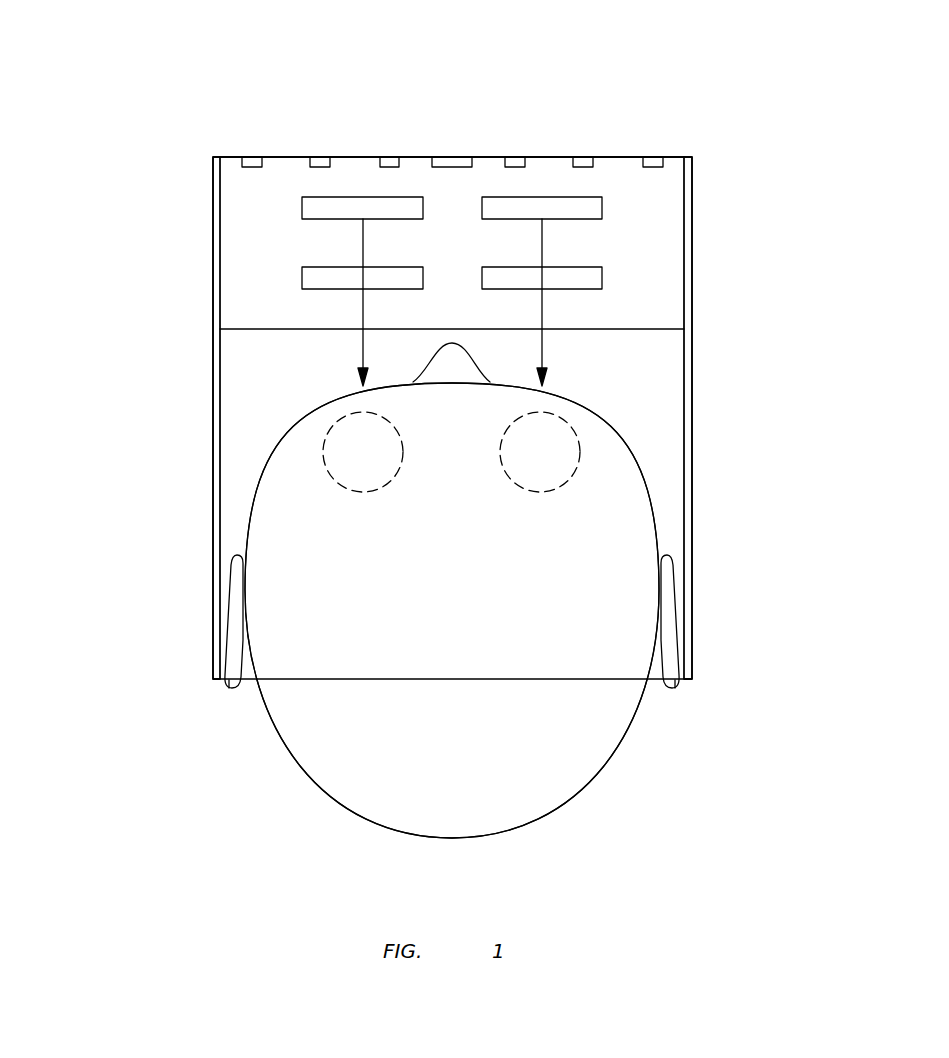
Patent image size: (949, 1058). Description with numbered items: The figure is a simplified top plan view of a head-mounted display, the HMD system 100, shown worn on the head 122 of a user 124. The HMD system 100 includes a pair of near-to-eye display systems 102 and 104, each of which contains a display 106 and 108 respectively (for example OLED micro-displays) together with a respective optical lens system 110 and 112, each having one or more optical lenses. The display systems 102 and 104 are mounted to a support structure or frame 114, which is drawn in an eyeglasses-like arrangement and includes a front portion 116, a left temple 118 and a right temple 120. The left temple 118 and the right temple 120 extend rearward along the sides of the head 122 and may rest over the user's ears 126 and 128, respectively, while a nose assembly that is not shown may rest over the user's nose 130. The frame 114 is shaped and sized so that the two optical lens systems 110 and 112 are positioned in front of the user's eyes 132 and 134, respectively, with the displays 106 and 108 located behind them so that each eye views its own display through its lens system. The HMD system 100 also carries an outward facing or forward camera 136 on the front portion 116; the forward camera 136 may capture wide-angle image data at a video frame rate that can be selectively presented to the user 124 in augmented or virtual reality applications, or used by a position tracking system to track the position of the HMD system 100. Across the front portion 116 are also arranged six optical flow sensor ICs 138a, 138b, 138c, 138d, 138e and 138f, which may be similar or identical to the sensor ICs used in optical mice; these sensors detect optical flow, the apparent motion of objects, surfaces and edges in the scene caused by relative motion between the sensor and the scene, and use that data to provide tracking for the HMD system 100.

The HMD system 100 is at (790, 135).
The near-to-eye display system 102 is at (288, 228).
The near-to-eye display system 104 is at (619, 228).
The display 106 is at (398, 197).
The display 108 is at (548, 197).
The optical lens system 110 is at (302, 278).
The optical lens system 112 is at (602, 280).
The frame 114 is at (213, 157).
The front portion 116 is at (293, 170).
The left temple 118 is at (213, 543).
The right temple 120 is at (692, 530).
The head 122 is at (527, 825).
The user 124 is at (648, 775).
The ear 126 is at (228, 690).
The ear 128 is at (676, 690).
The nose 130 is at (473, 358).
The eye 132 is at (322, 458).
The eye 134 is at (580, 467).
The forward camera 136 is at (455, 160).
The optical flow sensor IC 138a is at (258, 160).
The optical flow sensor IC 138b is at (325, 160).
The optical flow sensor IC 138c is at (393, 160).
The optical flow sensor IC 138d is at (516, 160).
The optical flow sensor IC 138e is at (585, 160).
The optical flow sensor IC 138f is at (655, 160).